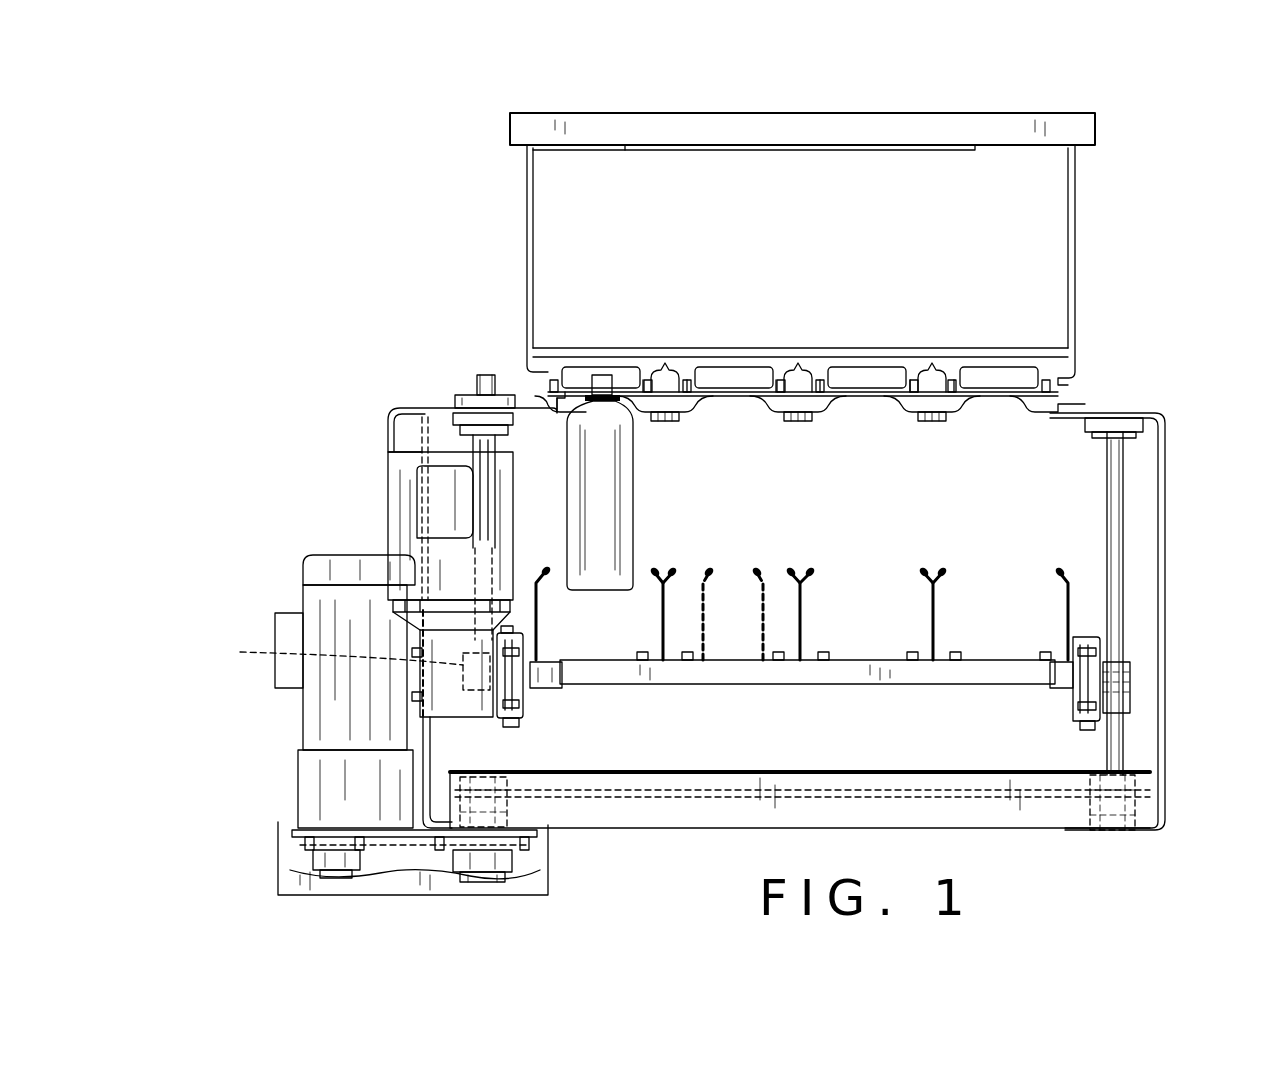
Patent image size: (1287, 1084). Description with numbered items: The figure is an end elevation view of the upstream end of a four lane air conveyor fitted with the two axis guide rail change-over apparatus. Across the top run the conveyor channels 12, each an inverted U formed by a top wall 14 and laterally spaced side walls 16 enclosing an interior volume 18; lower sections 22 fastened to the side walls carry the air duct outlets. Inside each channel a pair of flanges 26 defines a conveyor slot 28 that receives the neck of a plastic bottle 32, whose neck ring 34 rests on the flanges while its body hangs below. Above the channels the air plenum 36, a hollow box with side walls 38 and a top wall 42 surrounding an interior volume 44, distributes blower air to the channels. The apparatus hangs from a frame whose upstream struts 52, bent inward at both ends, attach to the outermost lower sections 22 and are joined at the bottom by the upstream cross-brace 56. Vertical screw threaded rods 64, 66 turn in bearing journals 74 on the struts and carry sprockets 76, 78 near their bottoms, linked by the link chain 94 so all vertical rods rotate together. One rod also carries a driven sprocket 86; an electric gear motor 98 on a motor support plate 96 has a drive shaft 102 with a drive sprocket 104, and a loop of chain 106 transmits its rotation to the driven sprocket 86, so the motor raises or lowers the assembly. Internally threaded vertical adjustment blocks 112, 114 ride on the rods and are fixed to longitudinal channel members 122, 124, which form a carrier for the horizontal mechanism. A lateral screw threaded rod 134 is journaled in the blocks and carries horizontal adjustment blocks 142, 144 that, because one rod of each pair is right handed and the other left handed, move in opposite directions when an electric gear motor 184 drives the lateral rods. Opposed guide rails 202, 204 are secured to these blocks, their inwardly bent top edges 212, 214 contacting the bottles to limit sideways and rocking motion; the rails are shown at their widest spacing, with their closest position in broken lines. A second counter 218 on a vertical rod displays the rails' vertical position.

The conveyor channel 12 is at (590, 325).
The top wall 14 is at (620, 367).
The side walls 16 is at (540, 380).
The interior volume 18 is at (574, 366).
The side wall lower sections 22 is at (553, 402).
The flanges 26 is at (548, 467).
The conveyor slots 28 is at (738, 408).
The plastic bottle 32 is at (615, 505).
The neck ring 34 is at (570, 488).
The air plenum 36 is at (1088, 200).
The plenum side walls 38 is at (525, 203).
The plenum top wall 42 is at (520, 130).
The plenum interior volume 44 is at (820, 206).
The upstream struts 52 is at (520, 408).
The upstream cross-brace 56 is at (888, 830).
The upstream vertical screw threaded rod 64 is at (482, 440).
The upstream vertical screw threaded rod 66 is at (1115, 572).
The bearing journals 74 is at (466, 412).
The sprocket 76 is at (507, 793).
The sprocket 78 is at (1145, 788).
The driven sprocket 86 is at (520, 850).
The link chain 94 is at (683, 790).
The motor support plate 96 is at (315, 830).
The electric gear motor 98 is at (320, 708).
The drive shaft 102 is at (335, 868).
The drive sprocket 104 is at (300, 838).
The loop of chain 106 is at (407, 845).
The vertical adjustment block 112 is at (344, 651).
The vertical adjustment block 114 is at (1112, 690).
The longitudinal channel member 122 is at (515, 726).
The second longitudinal channel member 124 is at (1085, 730).
The lateral screw threaded rod 134 is at (553, 688).
The horizontal adjustment block 142 is at (562, 658).
The horizontal adjustment block 144 is at (865, 682).
The electric gear motor 184 is at (400, 498).
The guide rail 202 is at (660, 594).
The guide rail 204 is at (538, 620).
The top edge 212 is at (668, 569).
The top edge 214 is at (548, 568).
The second counter 218 is at (480, 376).